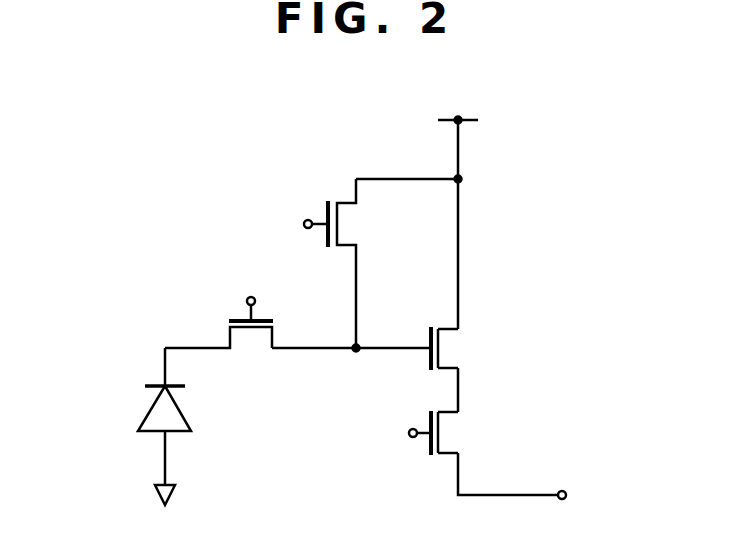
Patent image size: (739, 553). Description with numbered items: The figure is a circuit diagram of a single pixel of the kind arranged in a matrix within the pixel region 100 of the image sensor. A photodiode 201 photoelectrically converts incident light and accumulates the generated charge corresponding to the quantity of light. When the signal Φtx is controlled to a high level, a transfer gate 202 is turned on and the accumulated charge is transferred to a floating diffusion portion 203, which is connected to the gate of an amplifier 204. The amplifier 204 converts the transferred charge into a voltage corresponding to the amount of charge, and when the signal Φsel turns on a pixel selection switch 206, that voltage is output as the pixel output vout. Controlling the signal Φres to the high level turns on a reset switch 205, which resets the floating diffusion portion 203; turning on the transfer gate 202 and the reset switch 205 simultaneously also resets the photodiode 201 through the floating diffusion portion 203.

The pixel region 100 is at (162, 107).
The photodiode 201 is at (150, 407).
The transfer gate 202 is at (223, 323).
The floating diffusion portion 203 is at (357, 352).
The amplifier 204 is at (457, 348).
The reset switch 205 is at (330, 198).
The pixel selection switch 206 is at (457, 433).